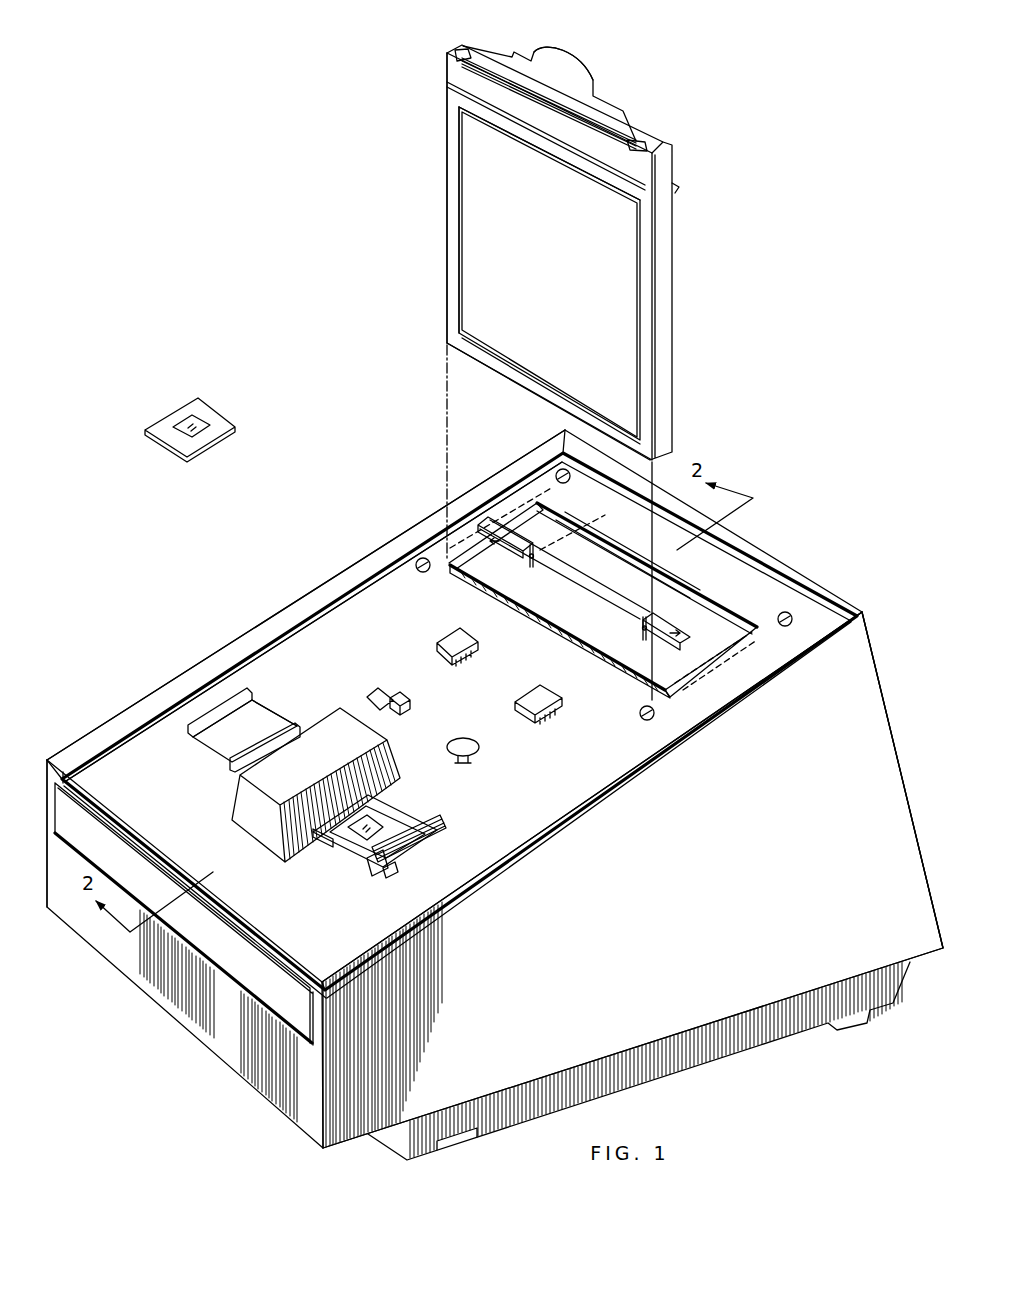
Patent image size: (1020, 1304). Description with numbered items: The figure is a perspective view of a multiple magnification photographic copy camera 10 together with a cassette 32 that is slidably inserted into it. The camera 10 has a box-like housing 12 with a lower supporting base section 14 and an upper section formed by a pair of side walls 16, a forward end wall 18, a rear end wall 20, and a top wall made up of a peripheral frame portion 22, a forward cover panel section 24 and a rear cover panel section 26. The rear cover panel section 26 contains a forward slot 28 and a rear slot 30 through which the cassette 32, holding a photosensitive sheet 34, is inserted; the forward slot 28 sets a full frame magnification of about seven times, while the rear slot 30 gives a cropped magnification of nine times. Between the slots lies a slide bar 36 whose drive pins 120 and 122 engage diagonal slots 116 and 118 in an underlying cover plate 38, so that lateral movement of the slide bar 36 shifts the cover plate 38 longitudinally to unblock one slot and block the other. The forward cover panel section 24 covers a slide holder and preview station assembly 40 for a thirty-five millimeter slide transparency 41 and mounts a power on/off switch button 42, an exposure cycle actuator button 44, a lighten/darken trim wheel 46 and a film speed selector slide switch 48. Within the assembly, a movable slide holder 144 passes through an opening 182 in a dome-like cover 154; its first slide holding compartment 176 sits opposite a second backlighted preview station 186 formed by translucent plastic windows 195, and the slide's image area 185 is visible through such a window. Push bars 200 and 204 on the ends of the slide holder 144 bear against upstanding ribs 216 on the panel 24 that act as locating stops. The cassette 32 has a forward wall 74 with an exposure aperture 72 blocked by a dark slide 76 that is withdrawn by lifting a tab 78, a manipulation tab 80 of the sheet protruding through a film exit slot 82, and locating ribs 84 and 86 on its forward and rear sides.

The camera 10 is at (833, 507).
The housing 12 is at (866, 611).
The lower supporting base section 14 is at (851, 1022).
The side walls 16 is at (44, 786).
The forward end wall 18 is at (228, 1050).
The rear end wall 20 is at (893, 682).
The peripheral frame portion 22 is at (318, 600).
The forward cover panel section 24 is at (365, 576).
The rear cover panel section 26 is at (436, 552).
The forward slot 28 is at (628, 678).
The rear slot 30 is at (721, 624).
The cassette 32 is at (676, 292).
The photosensitive sheet 34 is at (620, 91).
The slide bar 36 is at (523, 538).
The cover plate 38 is at (528, 498).
The slide holder and preview station assembly 40 is at (416, 802).
The slide transparency 41 is at (215, 393).
The power on/off switch button 42 is at (455, 637).
The exposure cycle actuator button 44 is at (540, 690).
The lighten/darken trim wheel 46 is at (465, 739).
The film speed selector slide switch 48 is at (400, 699).
The exposure aperture 72 is at (447, 177).
The forward wall 74 is at (480, 134).
The dark slide 76 is at (534, 284).
The tab 78 is at (456, 55).
The manipulation tab 80 is at (570, 66).
The film exit slot 82 is at (470, 54).
The locating rib 84 is at (645, 196).
The locating rib 86 is at (680, 188).
The diagonal slot 116 is at (600, 533).
The diagonal slot 118 is at (697, 590).
The drive pin 120 is at (534, 548).
The drive pin 122 is at (648, 618).
The slide holder 144 is at (444, 828).
The dome-like cover 154 is at (384, 757).
The first slide holding compartment 176 is at (381, 800).
The opening 182 is at (316, 848).
The image area 185 is at (184, 419).
The second backlighted preview station 186 is at (268, 722).
The translucent plastic windows 195 is at (253, 747).
The push bar 200 is at (370, 868).
The push bar 204 is at (292, 722).
The upstanding ribs 216 is at (248, 688).